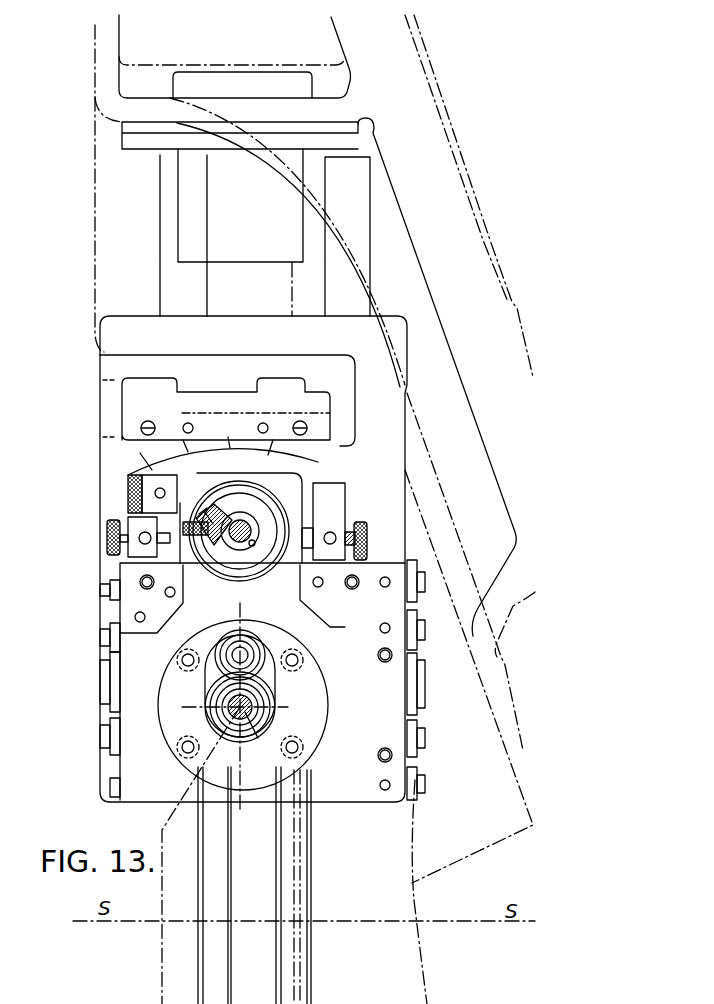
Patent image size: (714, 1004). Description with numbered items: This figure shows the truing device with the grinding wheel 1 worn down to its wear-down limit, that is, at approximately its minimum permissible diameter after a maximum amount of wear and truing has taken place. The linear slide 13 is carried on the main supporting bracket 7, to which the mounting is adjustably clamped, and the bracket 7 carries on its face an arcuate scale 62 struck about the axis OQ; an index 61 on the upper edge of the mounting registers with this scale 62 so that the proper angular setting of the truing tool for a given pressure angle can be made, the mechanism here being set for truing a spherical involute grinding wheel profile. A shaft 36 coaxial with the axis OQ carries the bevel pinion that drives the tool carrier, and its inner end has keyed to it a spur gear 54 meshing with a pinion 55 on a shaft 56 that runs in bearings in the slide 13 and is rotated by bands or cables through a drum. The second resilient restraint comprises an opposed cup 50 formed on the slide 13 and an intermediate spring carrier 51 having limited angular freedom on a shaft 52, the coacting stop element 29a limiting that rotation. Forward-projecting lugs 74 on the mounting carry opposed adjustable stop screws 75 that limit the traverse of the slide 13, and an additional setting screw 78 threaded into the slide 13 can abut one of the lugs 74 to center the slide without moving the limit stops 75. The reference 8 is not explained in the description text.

The wheel 1 is at (200, 758).
The main supporting bracket 7 is at (115, 394).
The housing 8 is at (93, 272).
The linear slide 13 is at (132, 758).
The stop element 29a is at (199, 511).
The shaft 36 is at (248, 705).
The opposed cup 50 is at (222, 470).
The intermediate spring carrier 51 is at (229, 526).
The shaft 52 is at (243, 532).
The spur gear 54 is at (231, 710).
The pinion 55 is at (218, 671).
The shaft 56 is at (241, 652).
The index 61 is at (155, 467).
The arcuate scale 62 is at (272, 445).
The lugs 74 is at (135, 523).
The adjustable stop screws 75 is at (105, 542).
The setting screw 78 is at (127, 488).